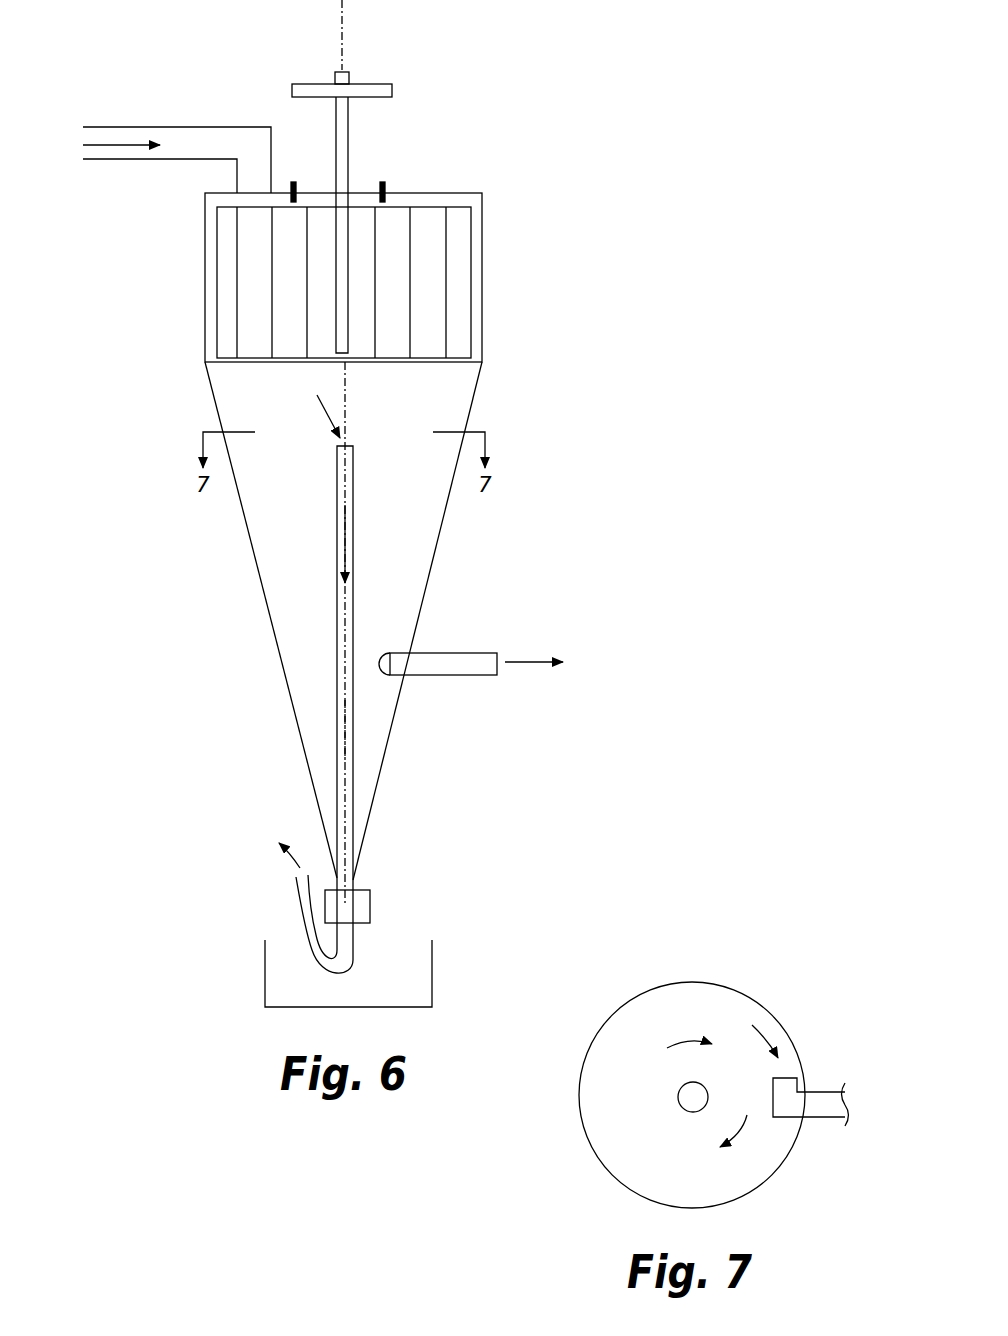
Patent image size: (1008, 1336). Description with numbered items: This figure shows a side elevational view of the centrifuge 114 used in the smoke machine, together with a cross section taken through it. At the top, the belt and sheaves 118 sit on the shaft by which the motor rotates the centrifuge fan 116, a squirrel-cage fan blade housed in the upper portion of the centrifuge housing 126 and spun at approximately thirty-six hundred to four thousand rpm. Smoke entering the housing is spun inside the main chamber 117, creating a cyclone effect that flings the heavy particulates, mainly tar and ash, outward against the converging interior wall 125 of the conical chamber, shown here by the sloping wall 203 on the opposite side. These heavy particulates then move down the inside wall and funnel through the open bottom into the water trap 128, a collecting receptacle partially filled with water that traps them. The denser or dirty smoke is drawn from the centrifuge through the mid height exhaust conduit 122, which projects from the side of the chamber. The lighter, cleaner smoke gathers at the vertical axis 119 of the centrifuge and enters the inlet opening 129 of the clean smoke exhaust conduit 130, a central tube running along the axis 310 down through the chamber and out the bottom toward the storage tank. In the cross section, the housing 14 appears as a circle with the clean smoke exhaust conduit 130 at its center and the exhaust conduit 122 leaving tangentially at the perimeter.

In FIG. 7, the cyclone separator housing 14 is at (640, 993).
In FIG. 6, the centrifuge 114 is at (413, 163).
In FIG. 6, the centrifuge fan 116 is at (460, 275).
In FIG. 6, the main chamber 117 is at (283, 400).
In FIG. 6, the belt and sheaves 118 is at (385, 83).
In FIG. 6, the vertical axis 119 is at (339, 3).
In FIG. 6, the mid height exhaust conduit 122 is at (458, 665).
In FIG. 7, the mid height exhaust conduit 122 is at (825, 1108).
In FIG. 6, the converging interior wall 125 is at (242, 493).
In FIG. 6, the centrifuge housing 126 is at (347, 621).
In FIG. 6, the water trap 128 is at (265, 957).
In FIG. 6, the inlet opening 129 is at (351, 446).
In FIG. 6, the clean smoke exhaust conduit 130 is at (355, 480).
In FIG. 7, the clean smoke exhaust conduit 130 is at (676, 1097).
In FIG. 6, the conical wall 203 is at (443, 535).
In FIG. 6, the centerline 310 is at (347, 733).